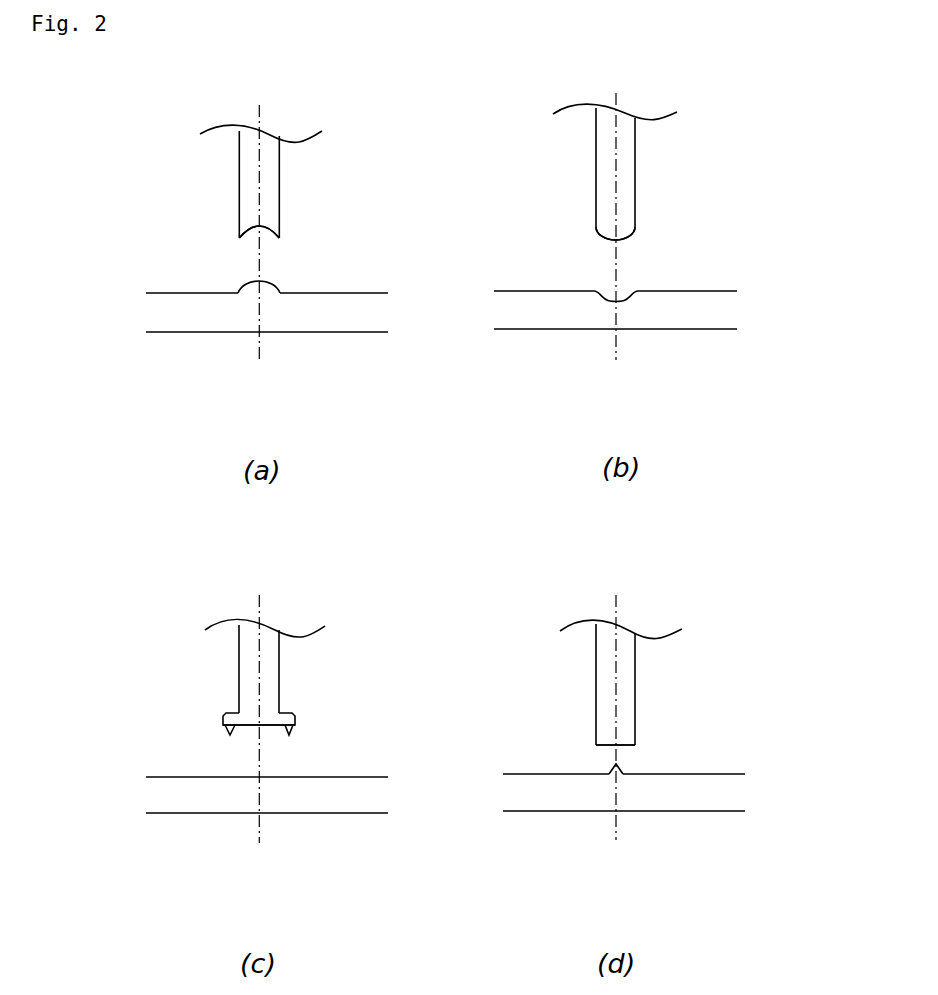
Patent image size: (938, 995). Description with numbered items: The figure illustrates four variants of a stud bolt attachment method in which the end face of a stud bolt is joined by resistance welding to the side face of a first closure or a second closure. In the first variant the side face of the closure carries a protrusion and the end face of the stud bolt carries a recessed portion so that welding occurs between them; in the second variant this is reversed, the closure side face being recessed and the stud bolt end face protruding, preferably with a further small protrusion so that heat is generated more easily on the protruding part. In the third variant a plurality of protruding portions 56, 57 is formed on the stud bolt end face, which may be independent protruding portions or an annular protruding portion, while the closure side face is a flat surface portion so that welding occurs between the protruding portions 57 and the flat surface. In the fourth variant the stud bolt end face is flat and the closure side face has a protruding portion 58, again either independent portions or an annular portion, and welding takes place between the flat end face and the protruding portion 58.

The protruding portion 56 is at (293, 727).
The protruding portion 57 is at (228, 729).
The protruding portion 58 is at (610, 772).